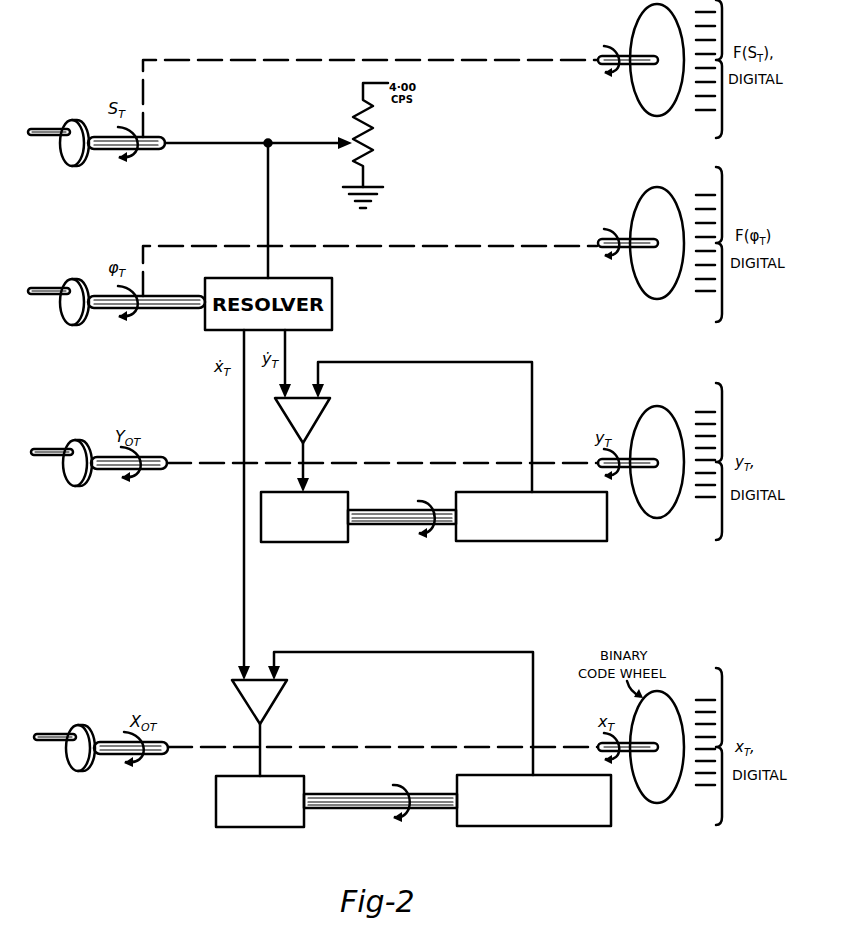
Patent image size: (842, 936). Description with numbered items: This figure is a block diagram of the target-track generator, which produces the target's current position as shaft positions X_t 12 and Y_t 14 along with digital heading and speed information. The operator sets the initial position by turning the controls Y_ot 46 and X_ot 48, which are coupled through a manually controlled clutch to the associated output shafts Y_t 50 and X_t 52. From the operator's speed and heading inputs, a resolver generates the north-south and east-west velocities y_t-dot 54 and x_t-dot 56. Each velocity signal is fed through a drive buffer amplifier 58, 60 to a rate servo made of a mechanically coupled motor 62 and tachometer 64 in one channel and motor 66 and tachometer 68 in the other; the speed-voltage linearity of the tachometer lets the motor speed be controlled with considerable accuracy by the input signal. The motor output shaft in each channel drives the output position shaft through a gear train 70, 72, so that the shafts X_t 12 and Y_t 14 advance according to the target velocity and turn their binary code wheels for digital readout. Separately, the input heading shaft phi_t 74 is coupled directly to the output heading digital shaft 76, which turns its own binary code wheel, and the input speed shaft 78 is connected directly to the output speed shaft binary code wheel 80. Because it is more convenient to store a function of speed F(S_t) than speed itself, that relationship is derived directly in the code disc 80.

The shaft position X_t 12 is at (648, 803).
The shaft position Y_t 14 is at (643, 520).
The initial position control Y_ot 46 is at (99, 452).
The initial position control X_ot 48 is at (102, 738).
The output shaft Y_t 50 is at (610, 429).
The output shaft X_t 52 is at (611, 713).
The north-south velocity y_t-dot 54 is at (213, 363).
The east-west velocity x_t-dot 56 is at (286, 354).
The drive buffer amplifier 58 is at (316, 424).
The drive buffer amplifier 60 is at (276, 703).
The motor 62 is at (318, 545).
The tachometer 64 is at (530, 543).
The motor 66 is at (270, 830).
The tachometer 68 is at (538, 830).
The gear train 70 is at (373, 537).
The gear train 72 is at (335, 815).
The input heading shaft phi_t 74 is at (73, 280).
The output heading digital shaft 76 is at (637, 286).
The input speed shaft 78 is at (70, 121).
The output speed shaft binary code wheel 80 is at (635, 106).